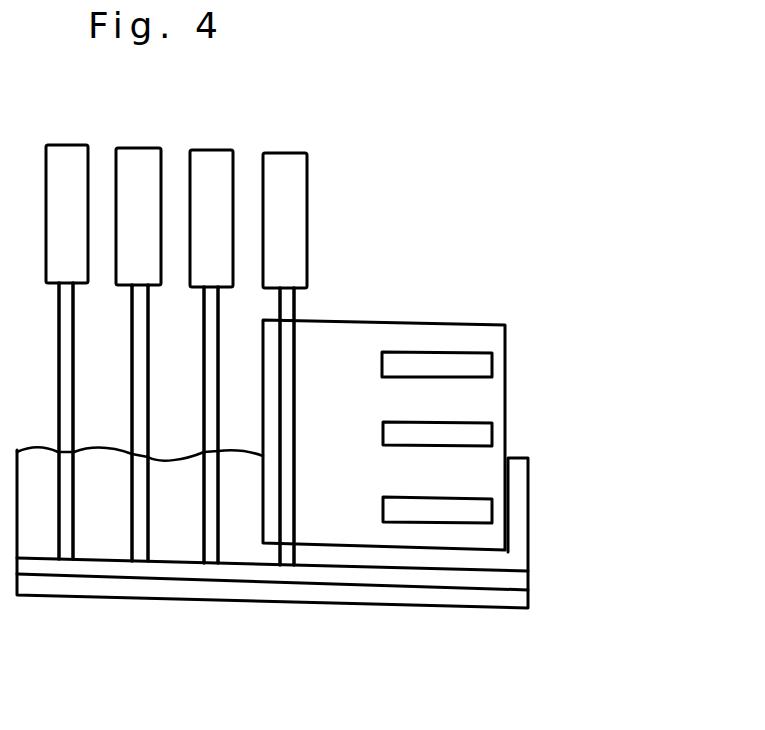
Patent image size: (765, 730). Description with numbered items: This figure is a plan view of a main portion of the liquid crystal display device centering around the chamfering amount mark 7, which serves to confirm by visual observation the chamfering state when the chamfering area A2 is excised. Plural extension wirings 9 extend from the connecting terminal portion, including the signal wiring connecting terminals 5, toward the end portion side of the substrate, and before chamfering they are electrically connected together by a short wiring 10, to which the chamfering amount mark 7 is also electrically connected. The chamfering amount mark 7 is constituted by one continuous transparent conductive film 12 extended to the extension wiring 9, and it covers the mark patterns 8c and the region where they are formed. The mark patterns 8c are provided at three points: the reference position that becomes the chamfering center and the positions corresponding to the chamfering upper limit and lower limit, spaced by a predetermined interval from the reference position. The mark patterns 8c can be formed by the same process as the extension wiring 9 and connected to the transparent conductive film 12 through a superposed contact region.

The signal wiring connecting terminal 5 is at (295, 212).
The extension wiring 9 is at (295, 350).
The transparent conductive film 12 is at (447, 323).
The mark patterns 8c is at (490, 499).
The chamfering amount mark 7 is at (465, 397).
The short wiring 10 is at (352, 577).
The chamfering area A2 is at (515, 562).